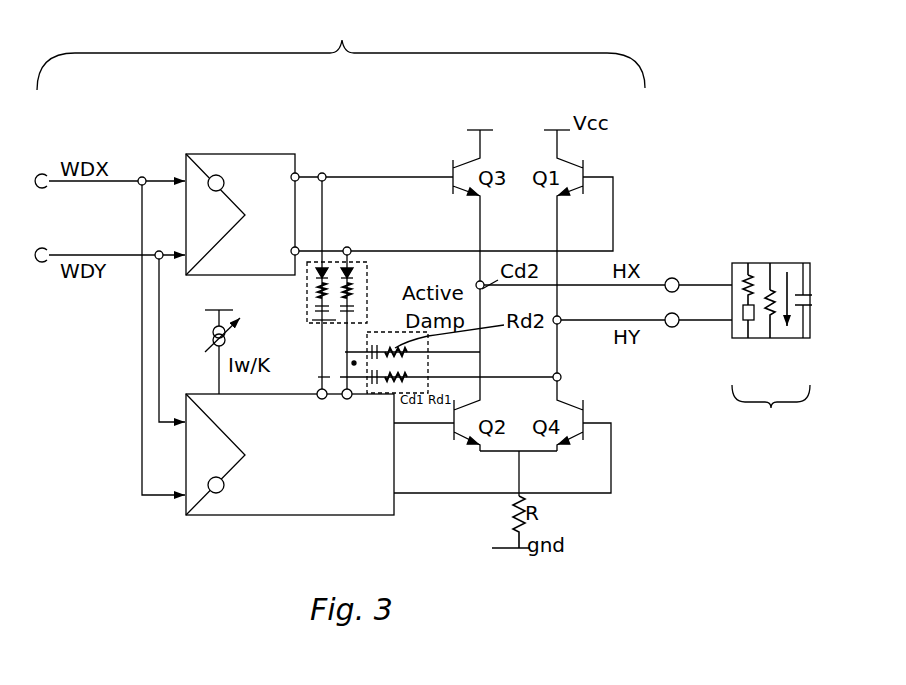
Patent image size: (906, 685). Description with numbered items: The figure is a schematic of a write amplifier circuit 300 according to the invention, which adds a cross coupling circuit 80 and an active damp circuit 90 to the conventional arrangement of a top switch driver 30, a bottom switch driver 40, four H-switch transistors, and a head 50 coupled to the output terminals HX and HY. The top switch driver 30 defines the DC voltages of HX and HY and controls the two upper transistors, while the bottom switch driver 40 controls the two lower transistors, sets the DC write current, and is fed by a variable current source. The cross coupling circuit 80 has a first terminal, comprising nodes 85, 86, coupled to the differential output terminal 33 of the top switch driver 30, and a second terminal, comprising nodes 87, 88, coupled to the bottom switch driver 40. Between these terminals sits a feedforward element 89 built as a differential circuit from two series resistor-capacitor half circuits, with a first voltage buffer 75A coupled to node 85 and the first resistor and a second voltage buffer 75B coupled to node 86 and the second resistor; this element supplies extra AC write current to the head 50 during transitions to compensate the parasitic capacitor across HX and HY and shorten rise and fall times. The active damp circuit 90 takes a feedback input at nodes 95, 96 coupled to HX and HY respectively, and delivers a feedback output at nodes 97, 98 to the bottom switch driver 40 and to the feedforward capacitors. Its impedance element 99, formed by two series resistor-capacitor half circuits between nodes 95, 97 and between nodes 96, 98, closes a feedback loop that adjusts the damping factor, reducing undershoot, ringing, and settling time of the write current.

The write amplifier circuit 300 is at (341, 50).
The top switch driver 30 is at (190, 168).
The bottom switch driver 40 is at (186, 515).
The differential output terminal 33 is at (295, 173).
The node 85 is at (322, 173).
The node 86 is at (349, 249).
The cross coupling circuit 80 is at (326, 234).
The first voltage buffer 75A is at (305, 285).
The second voltage buffer 75B is at (327, 248).
The feedforward element 89 is at (335, 320).
The node 97 is at (411, 340).
The node 98 is at (324, 377).
The active damp circuit 90 is at (422, 370).
The node 95 is at (455, 353).
The impedance element 99 is at (413, 362).
The node 96 is at (560, 377).
The node 88 is at (347, 399).
The node 87 is at (322, 399).
The head 50 is at (790, 350).